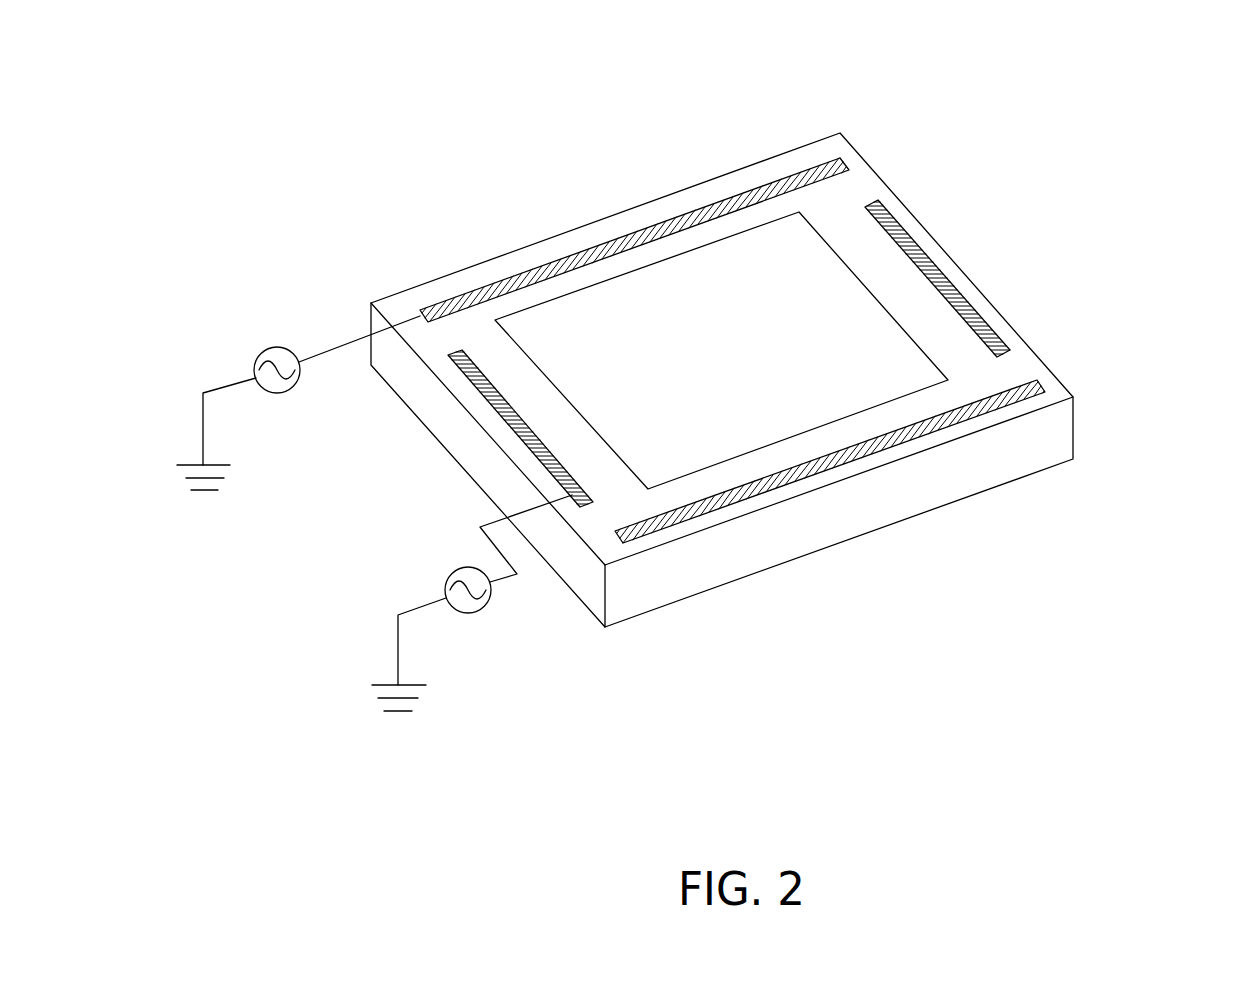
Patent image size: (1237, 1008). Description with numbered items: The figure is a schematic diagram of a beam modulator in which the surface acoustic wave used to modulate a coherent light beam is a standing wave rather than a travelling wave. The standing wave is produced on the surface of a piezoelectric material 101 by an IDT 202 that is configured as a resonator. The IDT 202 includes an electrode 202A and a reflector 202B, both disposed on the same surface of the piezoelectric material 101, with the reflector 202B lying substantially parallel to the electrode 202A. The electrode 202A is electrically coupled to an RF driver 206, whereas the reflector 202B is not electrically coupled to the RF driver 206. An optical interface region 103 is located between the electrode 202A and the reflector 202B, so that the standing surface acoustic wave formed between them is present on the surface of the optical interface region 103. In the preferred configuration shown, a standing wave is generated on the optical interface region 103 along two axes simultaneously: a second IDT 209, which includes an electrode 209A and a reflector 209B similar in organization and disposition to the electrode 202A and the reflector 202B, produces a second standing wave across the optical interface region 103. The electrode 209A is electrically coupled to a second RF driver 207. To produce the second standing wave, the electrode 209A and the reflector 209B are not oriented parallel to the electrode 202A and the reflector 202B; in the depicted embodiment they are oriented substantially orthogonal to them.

The piezoelectric material 101 is at (470, 440).
The optical interface region 103 is at (798, 297).
The IDT 202 is at (522, 186).
The electrode 202A is at (752, 190).
The reflector 202B is at (1040, 378).
The RF driver 206 is at (275, 348).
The second RF driver 207 is at (473, 613).
The second IDT 209 is at (419, 611).
The electrode 209A is at (477, 393).
The reflector 209B is at (947, 280).